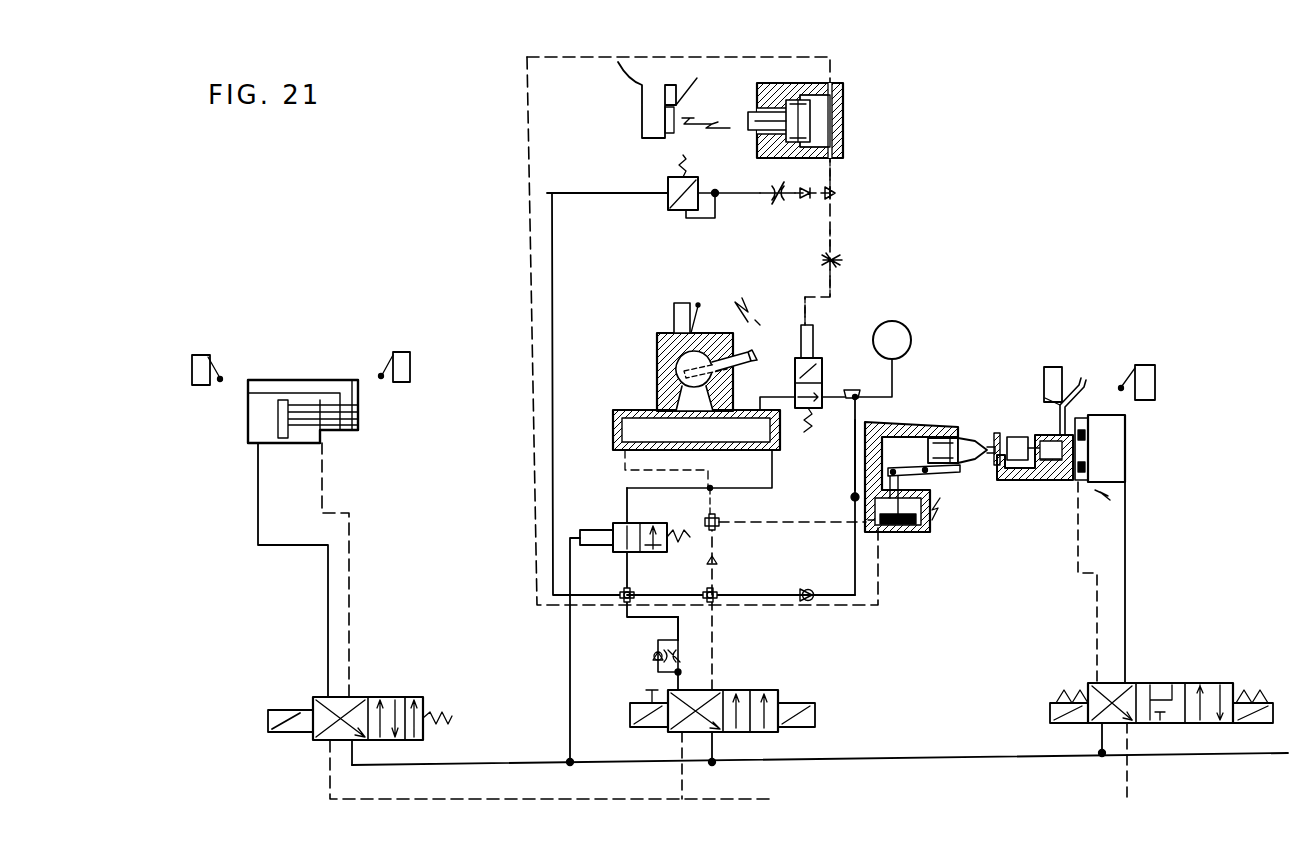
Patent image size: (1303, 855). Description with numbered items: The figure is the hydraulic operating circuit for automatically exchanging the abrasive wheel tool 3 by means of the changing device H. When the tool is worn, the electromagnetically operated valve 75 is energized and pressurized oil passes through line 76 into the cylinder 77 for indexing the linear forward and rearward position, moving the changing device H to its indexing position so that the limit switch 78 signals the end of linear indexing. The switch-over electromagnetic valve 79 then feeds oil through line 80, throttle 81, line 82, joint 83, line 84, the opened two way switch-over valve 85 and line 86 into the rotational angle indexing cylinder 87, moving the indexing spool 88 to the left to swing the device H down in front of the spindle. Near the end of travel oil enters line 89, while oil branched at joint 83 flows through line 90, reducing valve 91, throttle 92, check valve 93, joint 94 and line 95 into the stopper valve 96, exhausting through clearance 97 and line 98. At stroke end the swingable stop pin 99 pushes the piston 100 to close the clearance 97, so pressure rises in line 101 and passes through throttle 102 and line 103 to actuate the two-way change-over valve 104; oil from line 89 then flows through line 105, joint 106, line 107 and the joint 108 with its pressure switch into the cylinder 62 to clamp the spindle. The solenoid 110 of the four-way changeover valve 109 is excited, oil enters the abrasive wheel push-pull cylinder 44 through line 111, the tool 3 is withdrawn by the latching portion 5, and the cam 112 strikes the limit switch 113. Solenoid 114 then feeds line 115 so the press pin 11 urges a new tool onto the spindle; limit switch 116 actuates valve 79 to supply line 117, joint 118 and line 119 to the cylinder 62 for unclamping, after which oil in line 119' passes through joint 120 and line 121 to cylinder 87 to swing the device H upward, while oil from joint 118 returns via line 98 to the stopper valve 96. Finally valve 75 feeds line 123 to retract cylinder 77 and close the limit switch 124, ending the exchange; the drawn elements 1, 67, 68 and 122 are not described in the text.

The workpiece end 1 is at (1050, 482).
The abrasive wheel tool 3 is at (1018, 436).
The latching portion 5 is at (997, 430).
The press pin 11 is at (1030, 480).
The abrasive wheel push-pull cylinder 44 is at (1125, 448).
The spindle clamping cylinder 62 is at (920, 532).
The lever 67 is at (958, 470).
The feed piston 68 is at (960, 432).
The electromagnetically operated valve 75 is at (395, 690).
The line 76 is at (285, 545).
The cylinder for indexing the linear forward and rearward position 77 is at (255, 430).
The limit switch 78 is at (410, 380).
The switch-over electromagnetic valve 79 is at (778, 696).
The line 80 is at (675, 680).
The throttle 81 is at (680, 656).
The line 82 is at (672, 626).
The joint 83 is at (634, 590).
The line 84 is at (612, 552).
The two way switch-over valve 85 is at (655, 523).
The line 86 is at (625, 510).
The rotational angle indexing cylinder 87 is at (612, 430).
The indexing spool 88 is at (644, 400).
The line 89 is at (768, 385).
The line 90 is at (572, 228).
The reducing valve 91 is at (647, 208).
The throttle 92 is at (776, 190).
The check valve 93 is at (806, 198).
The joint 94 is at (836, 198).
The line 95 is at (832, 175).
The stopper valve 96 is at (846, 127).
The clearance 97 is at (832, 98).
The line 98 is at (702, 331).
The swingable stop pin 99 is at (688, 96).
The piston 100 is at (752, 120).
The line 101 is at (832, 242).
The throttle 102 is at (840, 262).
The line 103 is at (812, 297).
The two-way change-over valve 104 is at (813, 345).
The line 105 is at (832, 372).
The joint 106 is at (858, 400).
The line 107 is at (851, 435).
The joint having a pressure switch 108 is at (924, 320).
The four-way changeover valve 109 is at (1090, 672).
The solenoid 110 is at (1272, 700).
The line 111 is at (1094, 594).
The cam 112 is at (1082, 396).
The limit switch 113 is at (1150, 364).
The solenoid 114 is at (1048, 714).
The line 115 is at (1127, 562).
The limit switch 116 is at (1050, 366).
The line 117 is at (712, 685).
The joint 118 is at (717, 600).
The line 119 is at (853, 616).
The line 119' is at (792, 542).
The joint 120 is at (716, 530).
The line 121 is at (712, 500).
The pin 122 is at (690, 290).
The line 123 is at (351, 605).
The limit switch 124 is at (204, 354).
The changing device H is at (757, 355).